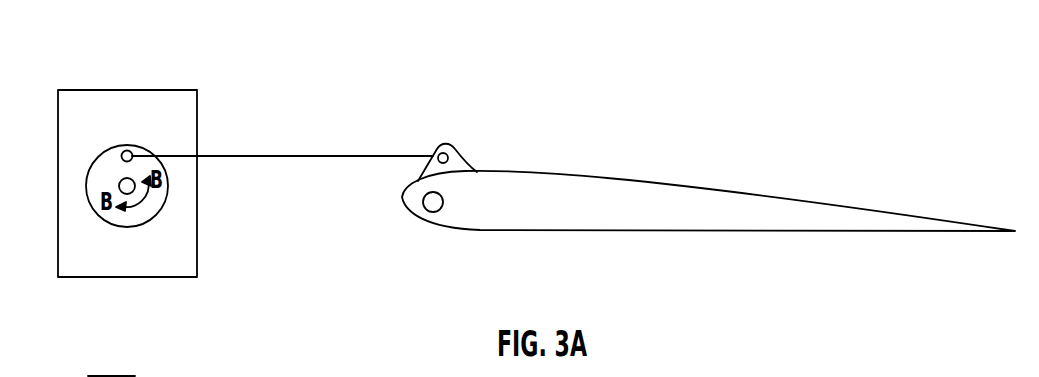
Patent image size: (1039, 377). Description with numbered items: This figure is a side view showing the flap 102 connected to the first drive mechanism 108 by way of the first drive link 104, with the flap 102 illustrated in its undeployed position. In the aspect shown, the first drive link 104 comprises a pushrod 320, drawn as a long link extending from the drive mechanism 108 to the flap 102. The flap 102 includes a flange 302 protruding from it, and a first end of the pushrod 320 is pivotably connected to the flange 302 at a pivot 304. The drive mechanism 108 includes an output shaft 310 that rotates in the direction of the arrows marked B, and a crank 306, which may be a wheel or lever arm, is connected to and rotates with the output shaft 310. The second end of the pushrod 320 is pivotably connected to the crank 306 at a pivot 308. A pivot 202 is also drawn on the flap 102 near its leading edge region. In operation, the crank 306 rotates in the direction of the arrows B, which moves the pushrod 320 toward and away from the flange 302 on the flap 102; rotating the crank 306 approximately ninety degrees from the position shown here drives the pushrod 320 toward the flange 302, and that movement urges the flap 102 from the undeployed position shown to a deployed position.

The flap 102 is at (953, 235).
The first drive link 104 is at (267, 155).
The first drive mechanism 108 is at (95, 90).
The hinge pivot 202 is at (428, 212).
The flange 302 is at (467, 153).
The pivot 304 is at (447, 151).
The crank 306 is at (115, 218).
The pivot 308 is at (130, 150).
The output shaft 310 is at (118, 184).
The pushrod 320 is at (357, 142).